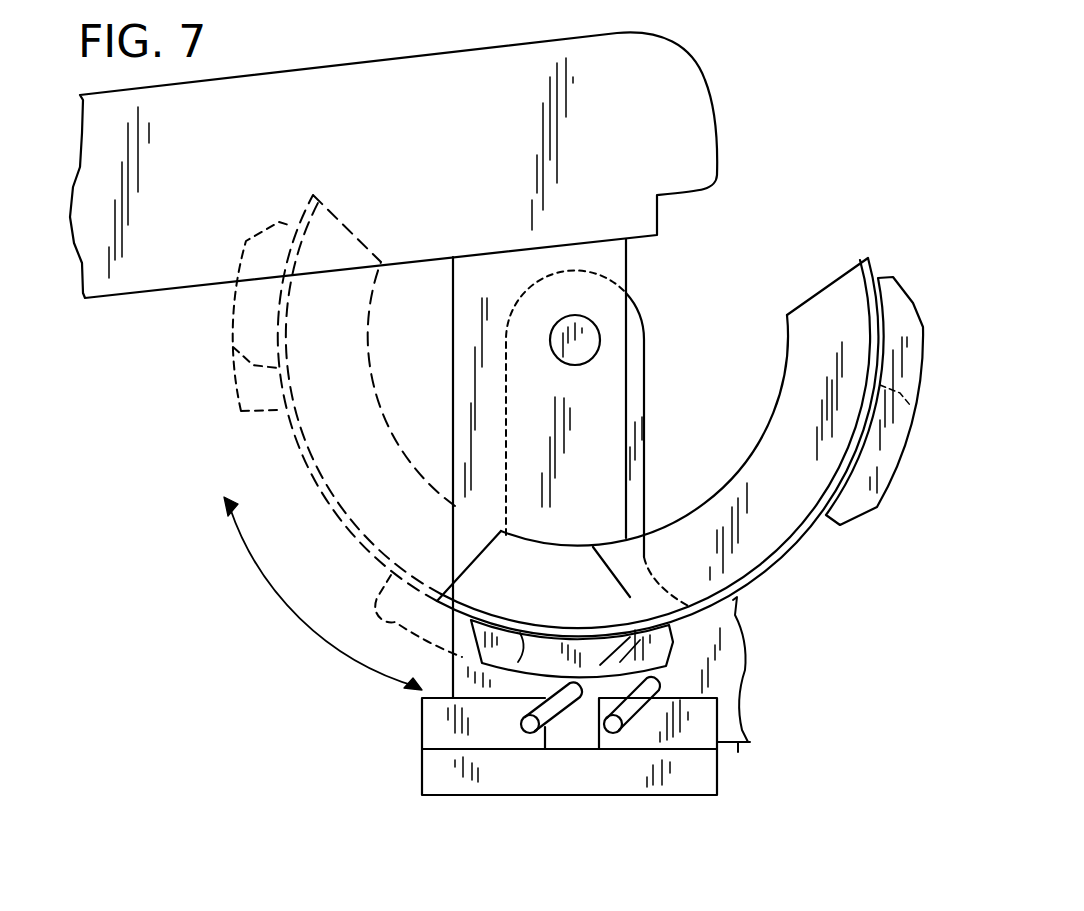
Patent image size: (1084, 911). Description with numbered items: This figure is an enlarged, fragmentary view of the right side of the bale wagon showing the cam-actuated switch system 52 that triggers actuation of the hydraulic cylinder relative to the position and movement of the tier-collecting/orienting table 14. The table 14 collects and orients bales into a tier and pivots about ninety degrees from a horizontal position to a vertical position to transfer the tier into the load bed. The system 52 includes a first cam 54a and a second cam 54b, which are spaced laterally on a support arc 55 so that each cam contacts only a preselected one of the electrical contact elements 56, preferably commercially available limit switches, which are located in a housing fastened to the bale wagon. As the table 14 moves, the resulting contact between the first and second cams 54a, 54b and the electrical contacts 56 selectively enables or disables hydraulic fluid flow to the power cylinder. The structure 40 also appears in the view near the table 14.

The tier-collecting/orienting table 14 is at (738, 752).
The board / workpiece 40 is at (160, 292).
The cam-actuated switch system 52 is at (578, 431).
The first cam 54a is at (667, 657).
The second cam 54b is at (880, 275).
The support arc 55 is at (741, 467).
The electrical contact elements 56 is at (608, 737).